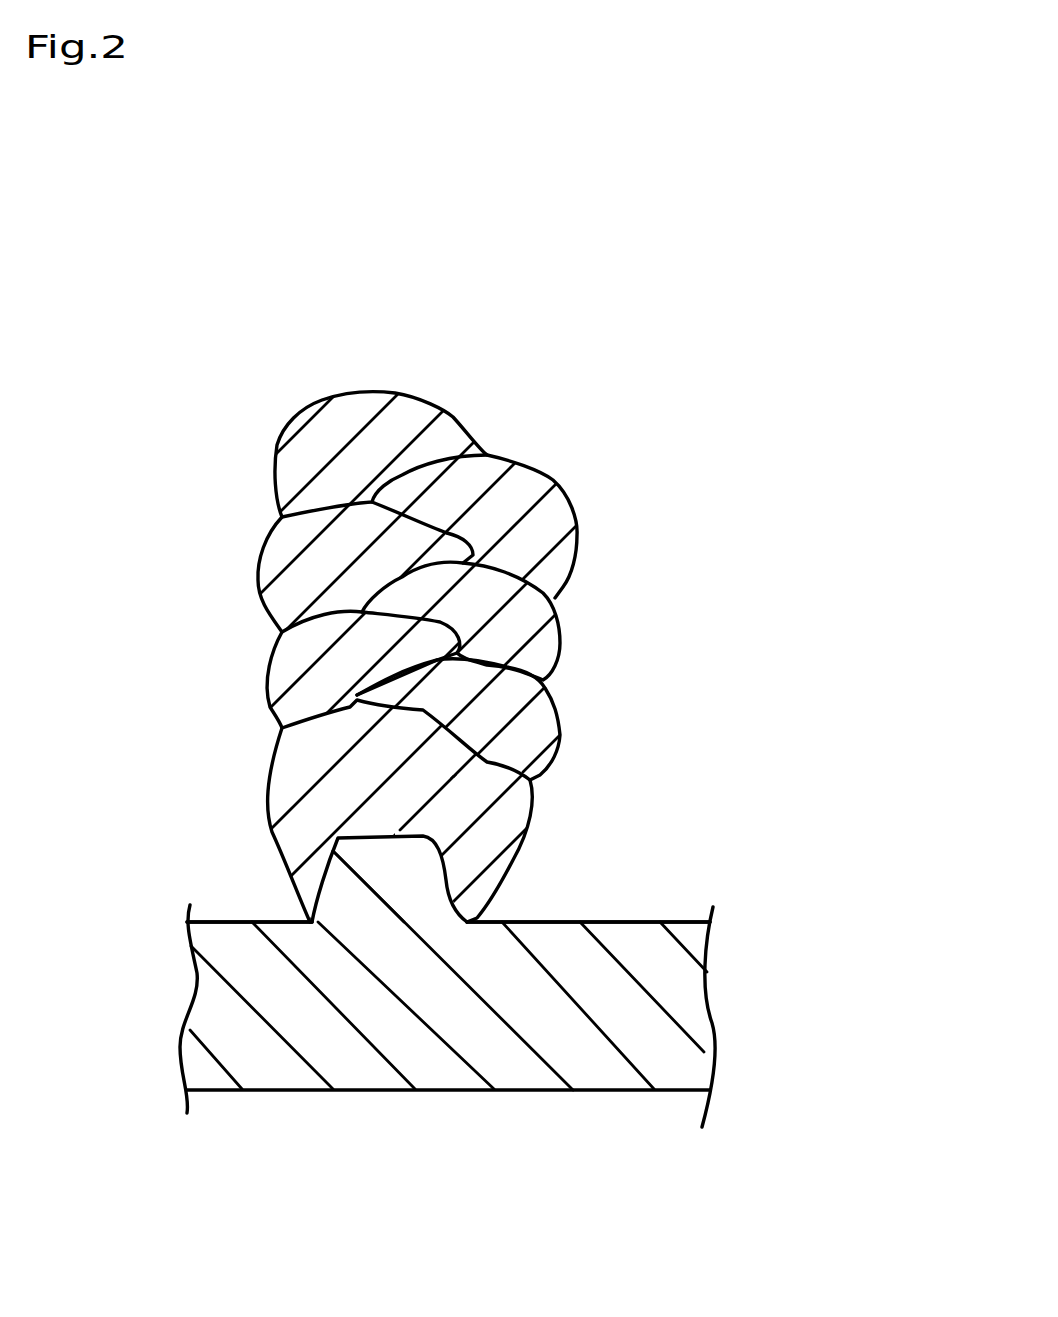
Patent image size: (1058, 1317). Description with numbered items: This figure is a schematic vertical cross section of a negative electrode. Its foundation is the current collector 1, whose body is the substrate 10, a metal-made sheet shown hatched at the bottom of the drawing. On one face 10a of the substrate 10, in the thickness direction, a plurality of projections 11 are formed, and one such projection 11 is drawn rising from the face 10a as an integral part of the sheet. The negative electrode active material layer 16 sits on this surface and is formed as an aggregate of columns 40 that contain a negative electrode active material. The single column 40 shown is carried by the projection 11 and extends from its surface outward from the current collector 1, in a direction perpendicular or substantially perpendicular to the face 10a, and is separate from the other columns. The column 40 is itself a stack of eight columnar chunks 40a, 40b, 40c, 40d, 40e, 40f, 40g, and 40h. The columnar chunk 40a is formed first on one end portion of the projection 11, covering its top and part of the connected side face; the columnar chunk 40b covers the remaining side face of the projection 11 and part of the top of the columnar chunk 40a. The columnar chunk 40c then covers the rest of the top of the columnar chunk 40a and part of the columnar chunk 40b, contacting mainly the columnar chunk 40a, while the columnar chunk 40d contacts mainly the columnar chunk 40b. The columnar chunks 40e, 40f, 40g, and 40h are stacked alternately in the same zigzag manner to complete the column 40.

The current collector 1 is at (549, 736).
The substrate 10 is at (670, 1010).
The face 10a is at (640, 922).
The projection 11 is at (397, 878).
The negative electrode active material layer 16 is at (588, 595).
The column 40 is at (559, 628).
The columnar chunk 40a is at (485, 823).
The columnar chunk 40b is at (335, 765).
The columnar chunk 40c is at (498, 713).
The columnar chunk 40d is at (382, 650).
The columnar chunk 40e is at (487, 603).
The columnar chunk 40f is at (387, 548).
The columnar chunk 40g is at (505, 490).
The columnar chunk 40h is at (476, 430).